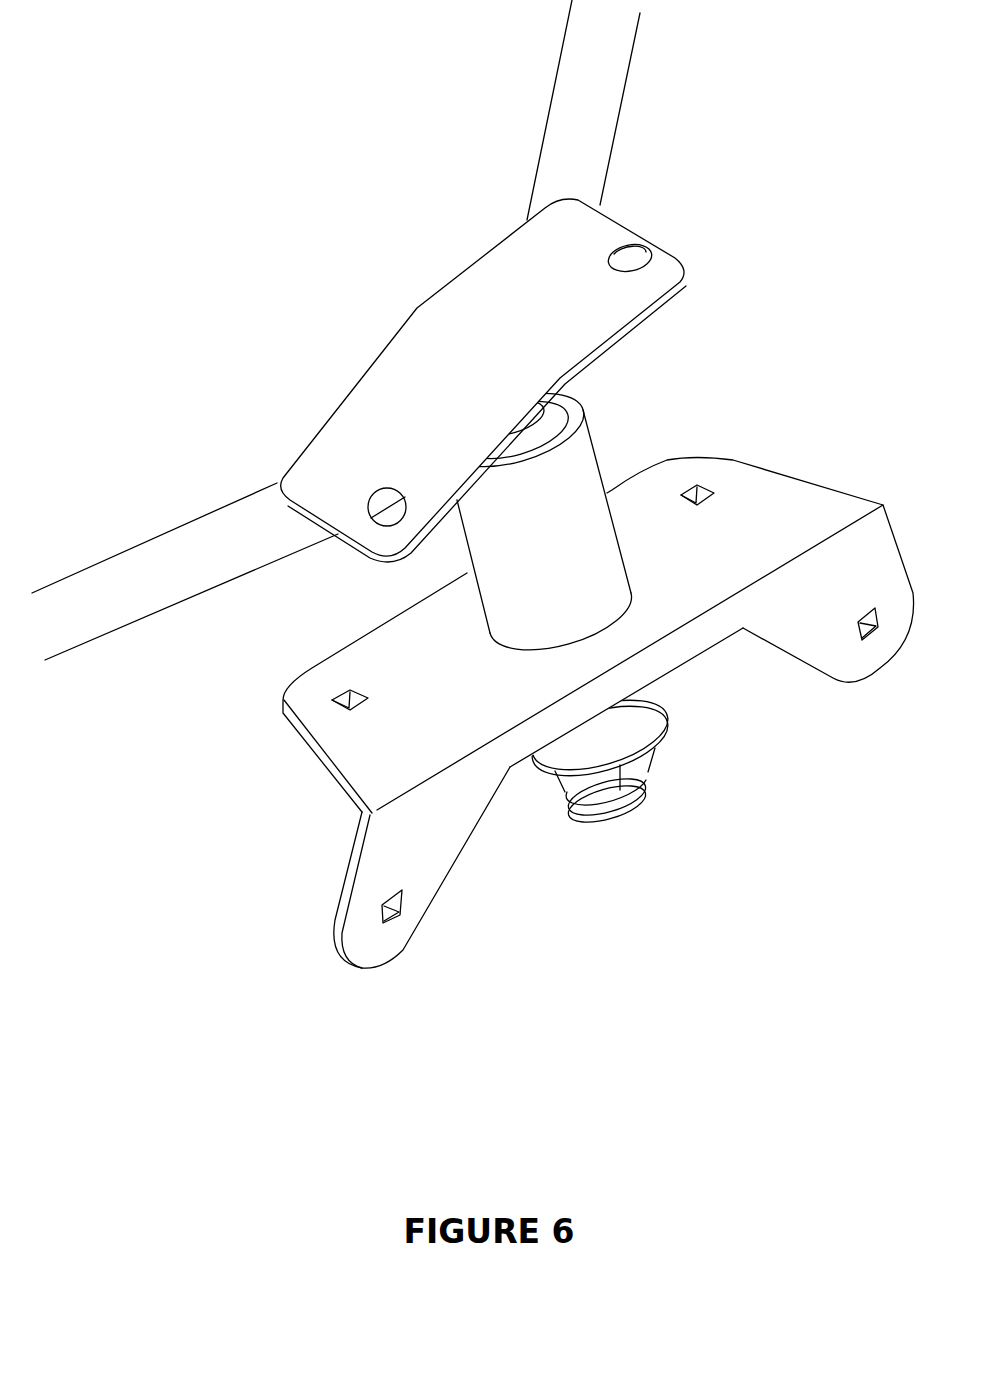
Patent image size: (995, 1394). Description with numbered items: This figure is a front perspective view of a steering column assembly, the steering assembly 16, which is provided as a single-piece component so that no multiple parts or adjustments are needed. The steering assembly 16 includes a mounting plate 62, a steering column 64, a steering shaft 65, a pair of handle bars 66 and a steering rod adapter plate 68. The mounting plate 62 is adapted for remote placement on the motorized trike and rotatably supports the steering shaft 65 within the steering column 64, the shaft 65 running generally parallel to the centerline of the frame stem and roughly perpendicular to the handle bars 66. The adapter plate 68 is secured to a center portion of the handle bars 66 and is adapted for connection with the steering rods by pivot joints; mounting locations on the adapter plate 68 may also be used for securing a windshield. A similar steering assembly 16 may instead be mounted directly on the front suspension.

The steering assembly 16 is at (777, 270).
The mounting plate 62 is at (684, 672).
The steering column 64 is at (505, 604).
The steering shaft 65 is at (549, 412).
The handle bars 66 is at (554, 69).
The steering rod adapter plate 68 is at (457, 267).